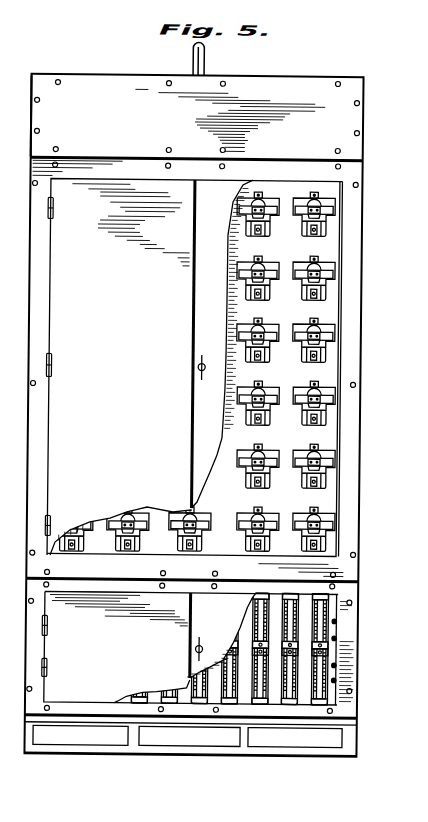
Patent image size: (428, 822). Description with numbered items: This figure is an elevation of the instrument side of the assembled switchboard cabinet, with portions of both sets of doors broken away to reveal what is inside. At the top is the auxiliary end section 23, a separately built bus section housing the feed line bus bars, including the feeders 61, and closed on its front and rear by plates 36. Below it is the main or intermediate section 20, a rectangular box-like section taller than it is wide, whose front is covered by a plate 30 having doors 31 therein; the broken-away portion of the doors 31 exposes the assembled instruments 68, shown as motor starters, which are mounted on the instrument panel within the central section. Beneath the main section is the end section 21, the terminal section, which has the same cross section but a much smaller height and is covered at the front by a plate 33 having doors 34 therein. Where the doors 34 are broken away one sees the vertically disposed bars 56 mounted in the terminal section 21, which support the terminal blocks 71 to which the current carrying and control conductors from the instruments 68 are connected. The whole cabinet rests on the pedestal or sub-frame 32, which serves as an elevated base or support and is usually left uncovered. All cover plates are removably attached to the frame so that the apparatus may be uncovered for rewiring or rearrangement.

The main or intermediate section 20 is at (326, 440).
The end section 21 is at (229, 648).
The auxiliary end section 23 is at (0, 72).
The plate 30 is at (31, 236).
The doors 31 is at (201, 184).
The pedestal or sub-frame 32 is at (26, 742).
The plate 33 is at (31, 636).
The doors 34 is at (197, 591).
The plates 36 is at (27, 118).
The vertically disposed bars 56 is at (290, 631).
The feeders 61 is at (205, 62).
The instruments 68 is at (338, 385).
The terminal blocks 71 is at (290, 643).